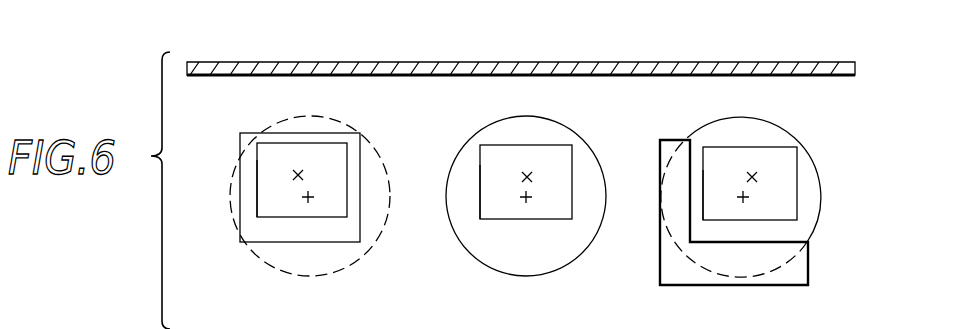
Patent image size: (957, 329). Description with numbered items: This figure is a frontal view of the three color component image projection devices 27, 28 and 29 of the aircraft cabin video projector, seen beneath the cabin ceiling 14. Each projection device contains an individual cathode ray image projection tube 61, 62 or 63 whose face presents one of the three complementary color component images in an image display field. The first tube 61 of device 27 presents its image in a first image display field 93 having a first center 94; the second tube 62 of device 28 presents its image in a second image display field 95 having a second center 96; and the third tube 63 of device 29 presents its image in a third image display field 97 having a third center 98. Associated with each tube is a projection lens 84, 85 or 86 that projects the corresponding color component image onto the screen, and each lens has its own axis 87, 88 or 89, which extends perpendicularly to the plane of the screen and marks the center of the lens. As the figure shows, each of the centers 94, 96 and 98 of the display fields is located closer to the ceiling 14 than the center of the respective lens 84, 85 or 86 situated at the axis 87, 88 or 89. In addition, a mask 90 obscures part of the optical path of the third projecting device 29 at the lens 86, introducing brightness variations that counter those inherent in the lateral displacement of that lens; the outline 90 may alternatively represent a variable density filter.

The ceiling 14 is at (830, 77).
The color component image projection device 28 is at (248, 128).
The color component image projection device 27 is at (482, 122).
The color component image projection device 29 is at (696, 120).
The second image display field 95 is at (320, 153).
The first image display field 93 is at (547, 153).
The third image display field 97 is at (733, 153).
The second center 96 is at (307, 178).
The first center 94 is at (530, 178).
The third center 98 is at (753, 177).
The second lens axis 88 is at (312, 200).
The first lens axis 87 is at (530, 200).
The third lens axis 89 is at (747, 202).
The second lens 85 is at (291, 232).
The first lens 84 is at (500, 262).
The third lens 86 is at (814, 190).
The cathode ray image projection tube 62 is at (257, 200).
The cathode ray image projection tube 61 is at (480, 207).
The cathode ray image projection tube 63 is at (703, 208).
The mask 90 is at (680, 270).